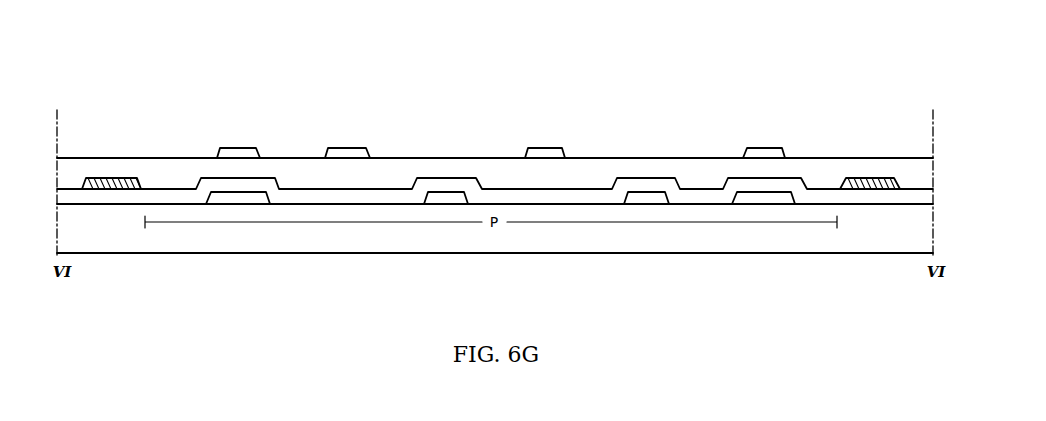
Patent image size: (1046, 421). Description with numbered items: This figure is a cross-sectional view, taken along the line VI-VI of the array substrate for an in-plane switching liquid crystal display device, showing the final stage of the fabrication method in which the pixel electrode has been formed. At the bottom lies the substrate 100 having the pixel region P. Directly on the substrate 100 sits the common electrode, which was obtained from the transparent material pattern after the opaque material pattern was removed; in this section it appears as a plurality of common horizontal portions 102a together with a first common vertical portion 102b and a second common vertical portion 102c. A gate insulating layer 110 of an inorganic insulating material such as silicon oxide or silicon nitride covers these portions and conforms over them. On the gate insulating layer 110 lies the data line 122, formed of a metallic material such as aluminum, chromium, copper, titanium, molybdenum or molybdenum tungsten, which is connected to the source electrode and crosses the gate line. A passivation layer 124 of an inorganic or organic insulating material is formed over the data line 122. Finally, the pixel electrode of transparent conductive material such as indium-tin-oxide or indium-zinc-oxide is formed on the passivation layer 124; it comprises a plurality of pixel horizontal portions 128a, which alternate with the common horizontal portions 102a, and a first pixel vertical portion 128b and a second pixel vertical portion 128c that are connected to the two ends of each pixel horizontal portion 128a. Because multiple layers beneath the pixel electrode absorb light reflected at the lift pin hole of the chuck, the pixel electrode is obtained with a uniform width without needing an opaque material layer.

The substrate 100 is at (876, 244).
The common horizontal portions 102a is at (444, 197).
The first common vertical portion 102b is at (241, 205).
The second common vertical portion 102c is at (762, 205).
The gate insulating layer 110 is at (591, 195).
The data line 122 is at (113, 178).
The passivation layer 124 is at (910, 158).
The pixel horizontal portions 128a is at (343, 148).
The first pixel vertical portion 128b is at (231, 148).
The second pixel vertical portion 128c is at (760, 148).